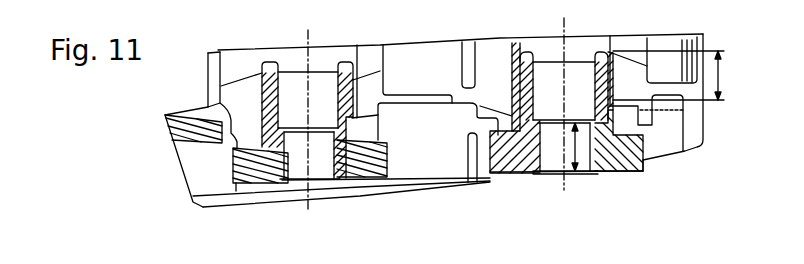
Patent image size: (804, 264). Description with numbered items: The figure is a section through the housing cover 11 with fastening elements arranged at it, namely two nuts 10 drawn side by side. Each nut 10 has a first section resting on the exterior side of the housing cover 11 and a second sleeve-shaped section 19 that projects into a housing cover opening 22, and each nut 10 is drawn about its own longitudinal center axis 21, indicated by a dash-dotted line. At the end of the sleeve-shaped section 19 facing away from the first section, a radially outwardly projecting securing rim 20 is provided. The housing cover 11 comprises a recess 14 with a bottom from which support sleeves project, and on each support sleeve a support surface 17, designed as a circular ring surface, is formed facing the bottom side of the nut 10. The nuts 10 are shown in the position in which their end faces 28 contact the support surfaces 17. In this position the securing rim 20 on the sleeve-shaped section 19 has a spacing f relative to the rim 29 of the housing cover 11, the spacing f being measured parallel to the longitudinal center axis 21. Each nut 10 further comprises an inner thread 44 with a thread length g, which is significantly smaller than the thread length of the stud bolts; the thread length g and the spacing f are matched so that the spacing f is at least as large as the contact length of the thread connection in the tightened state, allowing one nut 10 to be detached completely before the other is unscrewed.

The housing cover 11 is at (238, 63).
The longitudinal center axis 21 is at (309, 42).
The second sleeve-shaped section 19 is at (512, 74).
The housing cover opening 22 is at (518, 76).
The securing rim 20 is at (611, 42).
The spacing f is at (672, 75).
The rim 29 is at (645, 152).
The thread length g is at (600, 152).
The inner thread 44 is at (551, 165).
The support surface 17 is at (517, 147).
The nut 10 is at (367, 173).
The end face 28 is at (476, 132).
The recess 14 is at (437, 162).